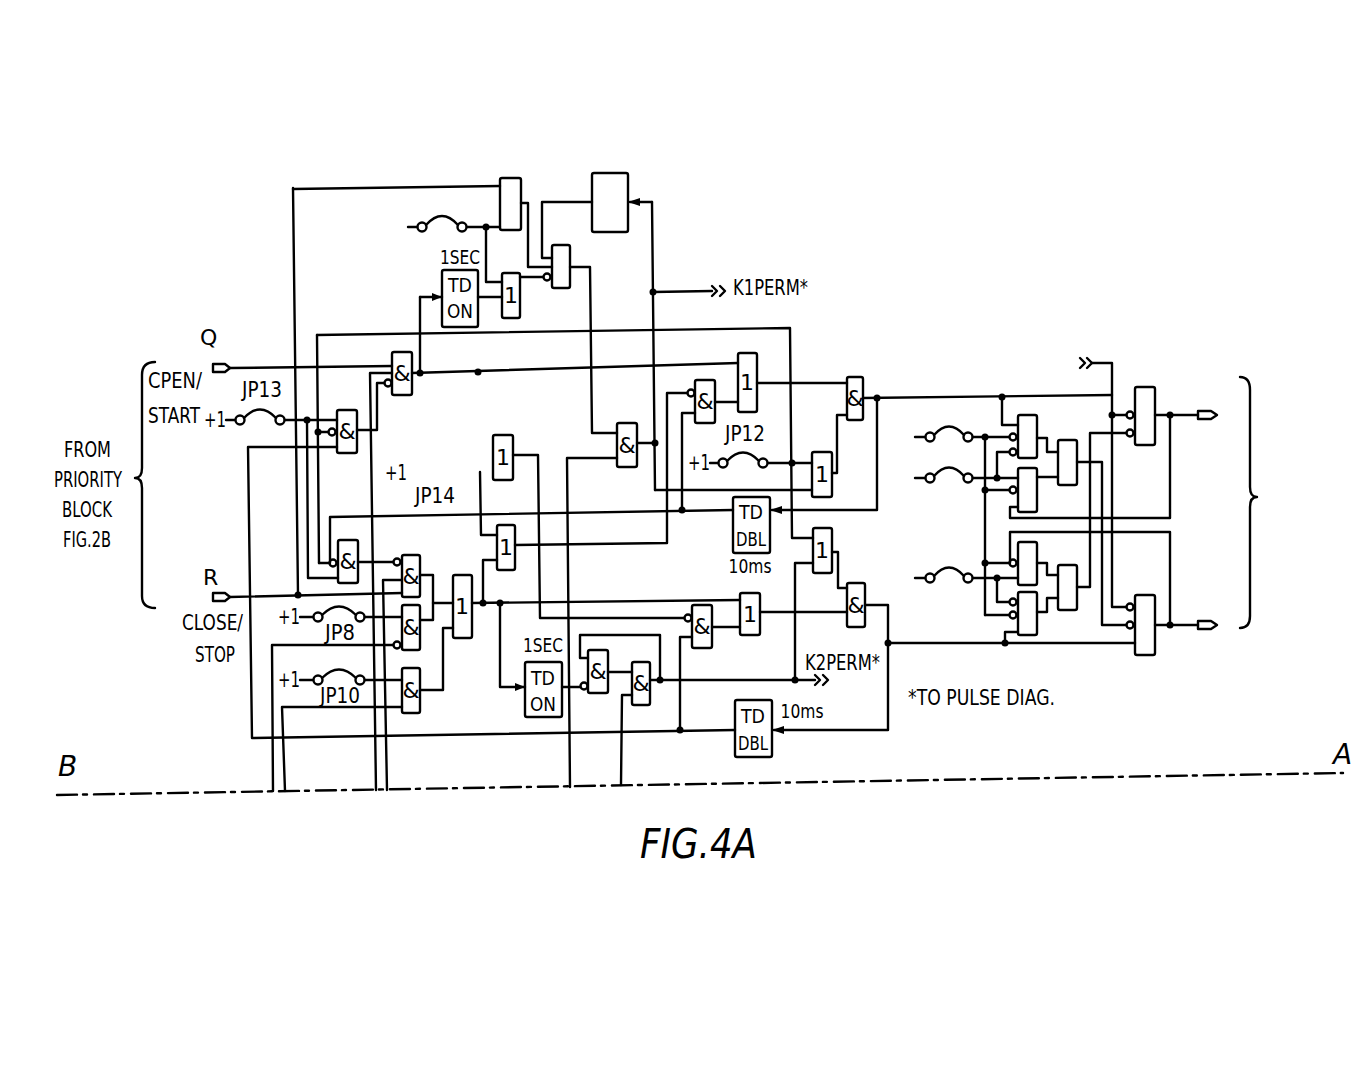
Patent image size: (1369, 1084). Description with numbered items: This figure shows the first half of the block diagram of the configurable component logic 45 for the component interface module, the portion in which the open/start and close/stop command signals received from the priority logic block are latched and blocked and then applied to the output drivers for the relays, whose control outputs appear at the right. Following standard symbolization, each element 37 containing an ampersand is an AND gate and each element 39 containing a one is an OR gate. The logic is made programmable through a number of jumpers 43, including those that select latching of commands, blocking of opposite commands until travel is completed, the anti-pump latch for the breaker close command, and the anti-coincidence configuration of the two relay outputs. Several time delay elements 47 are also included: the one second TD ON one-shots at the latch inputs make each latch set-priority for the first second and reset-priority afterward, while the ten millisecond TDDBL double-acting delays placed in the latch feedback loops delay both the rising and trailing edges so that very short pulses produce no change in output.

The AND gate 37 is at (512, 178).
The OR gate 39 is at (560, 289).
The jumper 43 is at (428, 237).
The component logic 45 is at (1201, 327).
The time delay element 47 is at (630, 190).